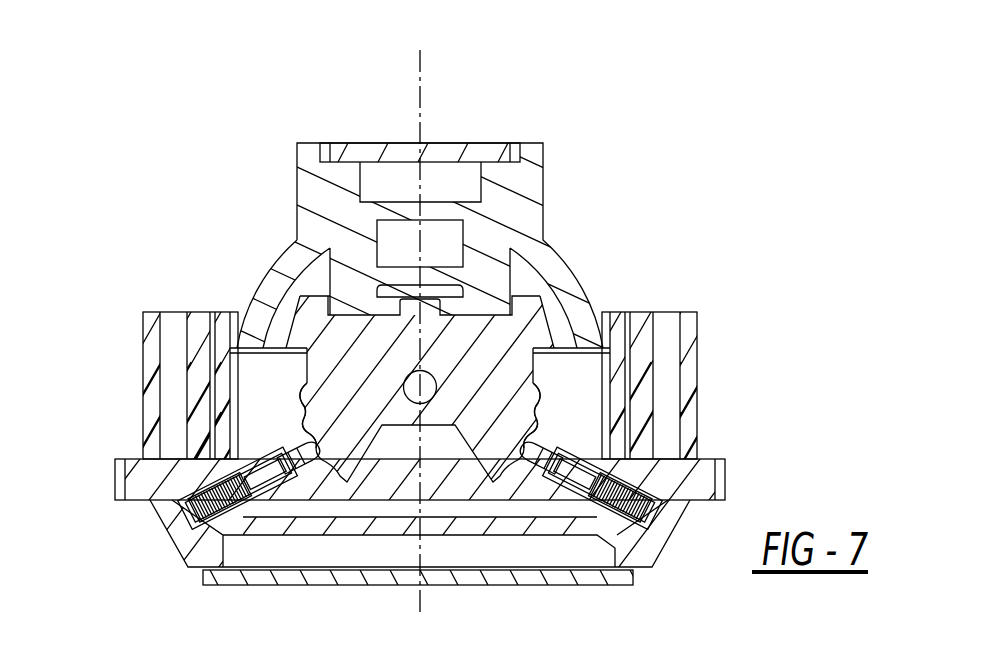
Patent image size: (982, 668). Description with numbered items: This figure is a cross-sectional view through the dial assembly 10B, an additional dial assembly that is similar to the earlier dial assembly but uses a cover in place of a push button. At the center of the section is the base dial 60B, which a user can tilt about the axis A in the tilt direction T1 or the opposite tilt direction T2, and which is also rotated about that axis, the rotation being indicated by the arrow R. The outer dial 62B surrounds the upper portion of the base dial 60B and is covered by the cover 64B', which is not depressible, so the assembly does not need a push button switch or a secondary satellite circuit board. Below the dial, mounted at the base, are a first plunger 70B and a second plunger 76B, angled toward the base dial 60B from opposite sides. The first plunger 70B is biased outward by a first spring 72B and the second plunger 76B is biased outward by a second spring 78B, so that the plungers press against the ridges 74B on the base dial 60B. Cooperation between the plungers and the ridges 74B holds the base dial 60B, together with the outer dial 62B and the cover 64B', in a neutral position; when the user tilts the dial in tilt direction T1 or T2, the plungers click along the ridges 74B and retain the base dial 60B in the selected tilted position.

The dial assembly 10B is at (148, 122).
The base dial 60B is at (322, 362).
The outer dial 62B is at (270, 278).
The cover 64B' is at (422, 131).
The first plunger 70B is at (298, 458).
The first spring 72B is at (218, 525).
The ridges 74B is at (310, 420).
The second plunger 76B is at (533, 425).
The second spring 78B is at (622, 533).
The axis A is at (430, 383).
The rotation direction R is at (441, 38).
The tilt direction T1 is at (118, 213).
The tilt direction T2 is at (720, 213).